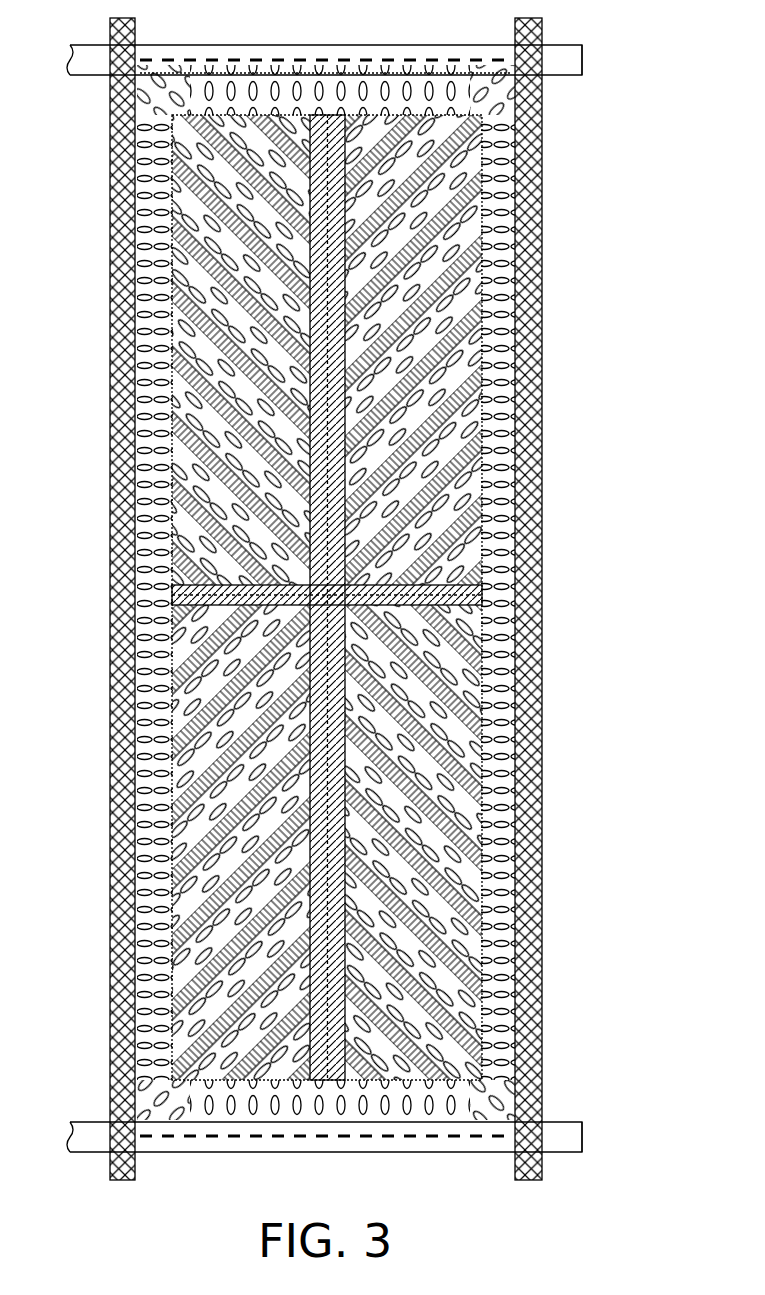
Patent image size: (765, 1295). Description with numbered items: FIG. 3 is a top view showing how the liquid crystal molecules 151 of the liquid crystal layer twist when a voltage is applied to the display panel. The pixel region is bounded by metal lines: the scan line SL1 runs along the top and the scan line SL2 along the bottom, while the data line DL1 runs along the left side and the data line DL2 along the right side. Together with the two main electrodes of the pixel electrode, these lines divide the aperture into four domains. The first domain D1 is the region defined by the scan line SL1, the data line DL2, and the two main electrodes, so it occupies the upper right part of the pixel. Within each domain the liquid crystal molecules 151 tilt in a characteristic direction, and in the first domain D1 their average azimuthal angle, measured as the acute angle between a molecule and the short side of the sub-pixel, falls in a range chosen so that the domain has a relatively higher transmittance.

The liquid crystal molecules 151 is at (258, 58).
The scan line SL1 is at (571, 61).
The scan line SL2 is at (603, 1106).
The data line DL1 is at (112, 526).
The data line DL2 is at (540, 515).
The first domain D1 is at (487, 243).